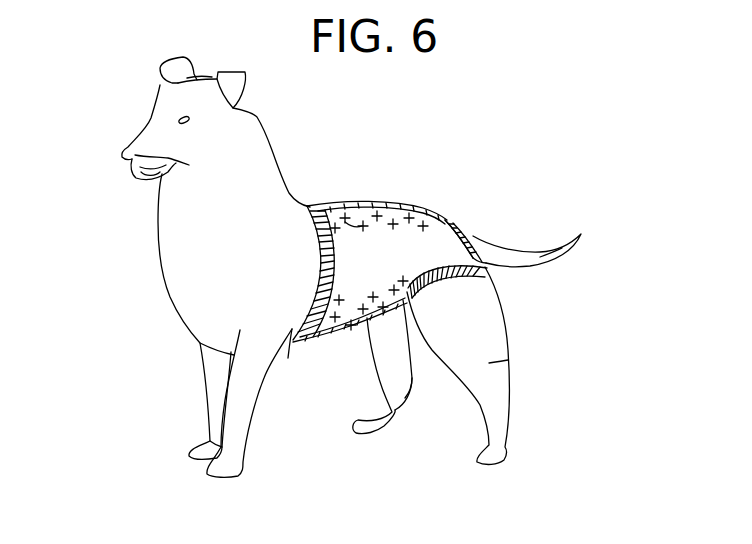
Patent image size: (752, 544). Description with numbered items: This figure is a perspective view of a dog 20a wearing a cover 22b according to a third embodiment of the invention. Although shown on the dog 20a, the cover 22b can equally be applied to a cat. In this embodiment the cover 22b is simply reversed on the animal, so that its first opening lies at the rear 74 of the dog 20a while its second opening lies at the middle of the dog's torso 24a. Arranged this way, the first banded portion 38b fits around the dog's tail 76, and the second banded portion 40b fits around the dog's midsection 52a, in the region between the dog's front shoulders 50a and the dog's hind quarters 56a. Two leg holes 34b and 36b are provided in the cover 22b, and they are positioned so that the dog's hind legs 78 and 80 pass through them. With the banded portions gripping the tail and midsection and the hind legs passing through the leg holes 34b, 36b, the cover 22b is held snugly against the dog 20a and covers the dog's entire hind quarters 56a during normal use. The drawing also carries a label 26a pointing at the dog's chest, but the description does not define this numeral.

The dog 20a is at (451, 234).
The torso 24a is at (359, 189).
The midsection 52a is at (378, 194).
The cover 22b is at (408, 197).
The second banded portion 40b is at (334, 207).
The hind quarters 56a is at (457, 212).
The first banded portion 38b is at (477, 227).
The rear 74 is at (470, 227).
The tail 76 is at (540, 257).
The leg hole 36b is at (457, 275).
The hind leg 78 is at (489, 363).
The hind leg 80 is at (412, 377).
The leg hole 34b is at (390, 323).
The front shoulders 50a is at (288, 359).
The animal (dog) 26a is at (351, 267).